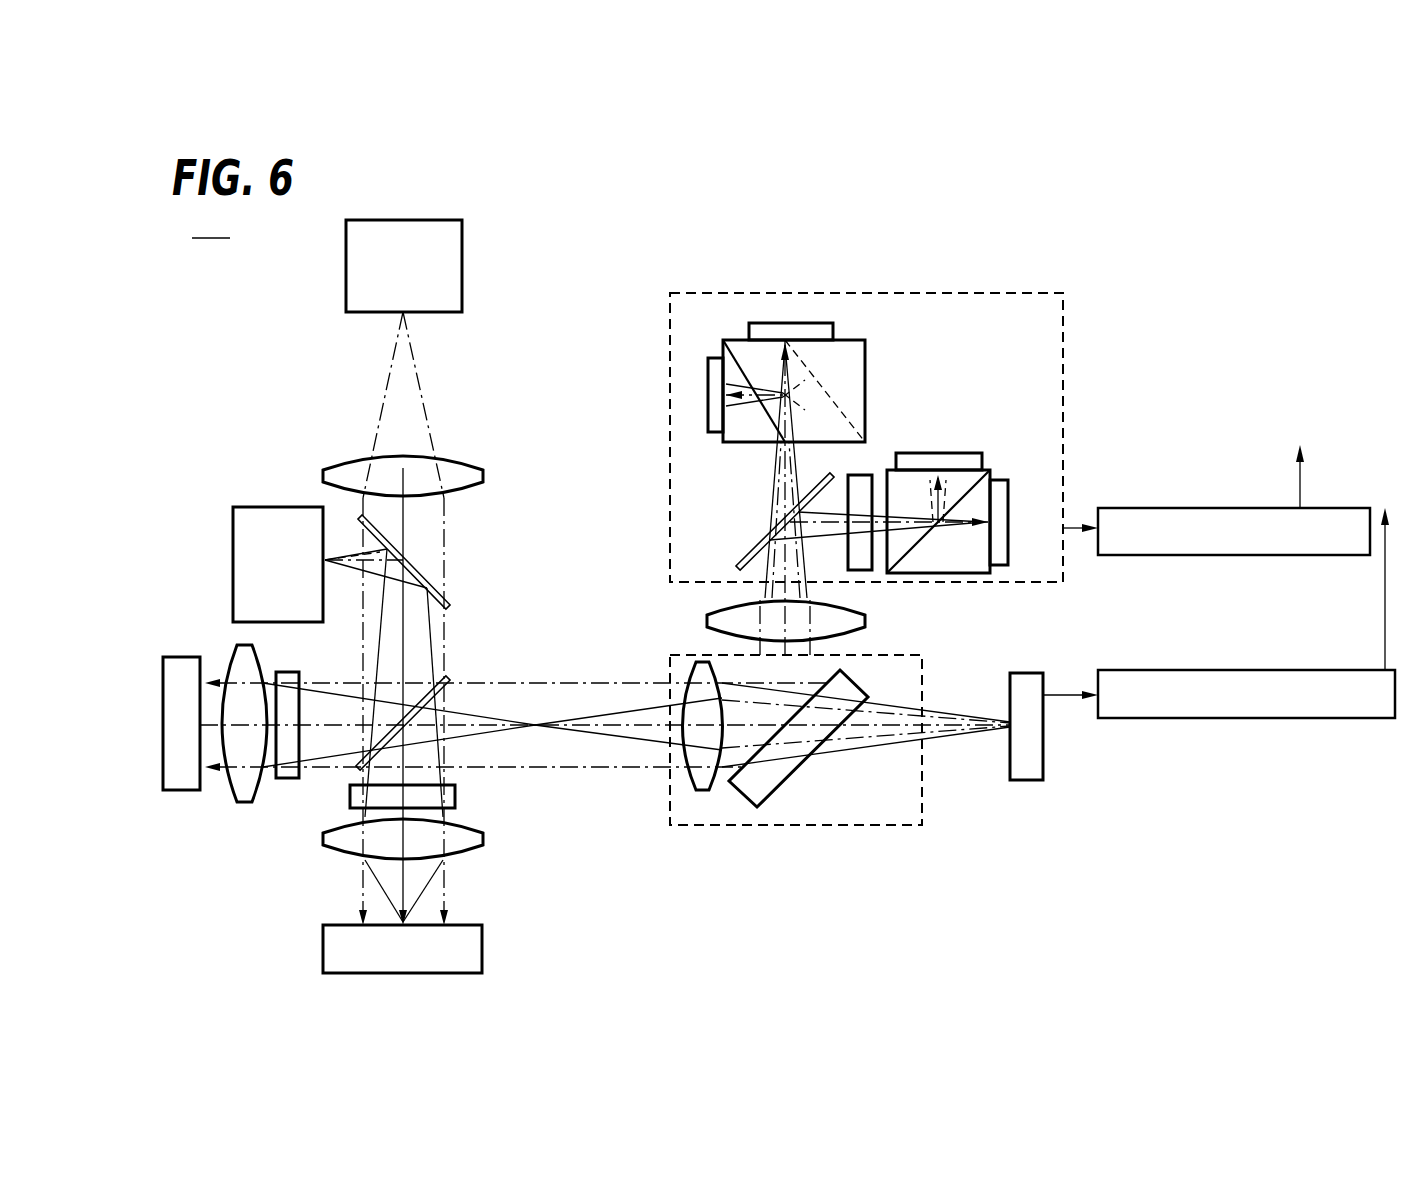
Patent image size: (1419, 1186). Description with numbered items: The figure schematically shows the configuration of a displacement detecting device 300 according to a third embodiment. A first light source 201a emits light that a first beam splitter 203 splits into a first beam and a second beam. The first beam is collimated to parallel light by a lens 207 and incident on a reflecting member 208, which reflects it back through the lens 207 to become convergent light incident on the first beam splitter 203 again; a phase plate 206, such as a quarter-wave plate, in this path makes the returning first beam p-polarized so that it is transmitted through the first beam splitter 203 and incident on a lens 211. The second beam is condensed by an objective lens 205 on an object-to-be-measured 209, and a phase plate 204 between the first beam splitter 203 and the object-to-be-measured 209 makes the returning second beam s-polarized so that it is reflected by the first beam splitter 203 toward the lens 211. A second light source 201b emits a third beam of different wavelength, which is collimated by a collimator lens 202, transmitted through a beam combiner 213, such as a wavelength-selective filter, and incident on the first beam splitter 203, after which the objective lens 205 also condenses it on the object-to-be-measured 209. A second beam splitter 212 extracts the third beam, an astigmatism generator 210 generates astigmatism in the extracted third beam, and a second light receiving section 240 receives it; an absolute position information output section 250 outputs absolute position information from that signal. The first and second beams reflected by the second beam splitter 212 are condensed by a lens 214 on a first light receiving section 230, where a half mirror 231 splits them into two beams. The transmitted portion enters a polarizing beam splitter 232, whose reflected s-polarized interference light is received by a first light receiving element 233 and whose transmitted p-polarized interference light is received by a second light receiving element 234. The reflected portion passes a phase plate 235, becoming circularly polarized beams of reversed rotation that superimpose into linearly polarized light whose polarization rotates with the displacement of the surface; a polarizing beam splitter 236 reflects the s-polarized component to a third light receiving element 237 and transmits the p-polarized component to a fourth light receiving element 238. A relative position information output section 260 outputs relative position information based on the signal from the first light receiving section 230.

The displacement detecting device 300 is at (211, 225).
The first light source 201a is at (234, 554).
The second light source 201b is at (463, 265).
The collimator lens 202 is at (478, 450).
The first beam splitter 203 is at (357, 770).
The phase plate 204 is at (456, 797).
The objective lens 205 is at (452, 855).
The phase plate 206 is at (288, 674).
The lens 207 is at (240, 648).
The reflecting member 208 is at (184, 665).
The object-to-be-measured 209 is at (483, 948).
The astigmatism generator 210 is at (910, 826).
The lens 211 is at (702, 791).
The second beam splitter 212 is at (762, 808).
The beam combiner 213 is at (451, 601).
The lens 214 is at (866, 621).
The first light receiving section 230 is at (995, 293).
The half mirror 231 is at (748, 553).
The polarizing beam splitter 232 is at (845, 340).
The first light receiving element 233 is at (708, 395).
The second light receiving element 234 is at (788, 323).
The phase plate 235 is at (860, 475).
The polarizing beam splitter 236 is at (986, 470).
The third light receiving element 237 is at (938, 453).
The fourth light receiving element 238 is at (1008, 516).
The second light receiving section 240 is at (1044, 765).
The absolute position information output section 250 is at (1254, 664).
The relative position information output section 260 is at (1220, 502).